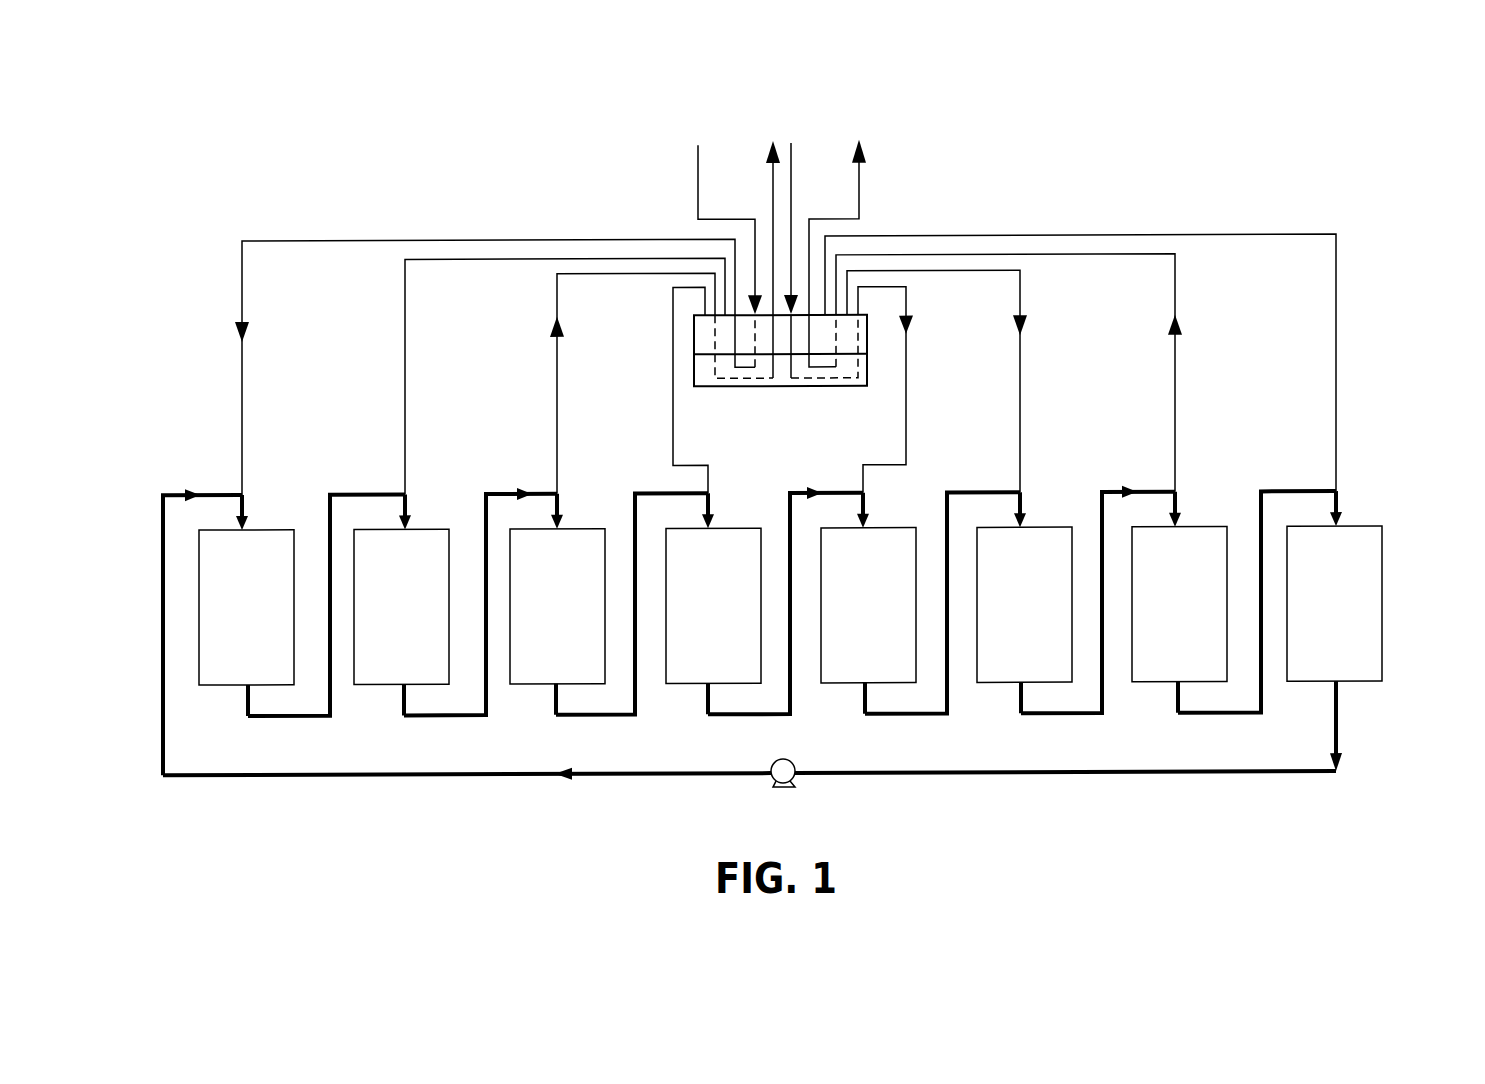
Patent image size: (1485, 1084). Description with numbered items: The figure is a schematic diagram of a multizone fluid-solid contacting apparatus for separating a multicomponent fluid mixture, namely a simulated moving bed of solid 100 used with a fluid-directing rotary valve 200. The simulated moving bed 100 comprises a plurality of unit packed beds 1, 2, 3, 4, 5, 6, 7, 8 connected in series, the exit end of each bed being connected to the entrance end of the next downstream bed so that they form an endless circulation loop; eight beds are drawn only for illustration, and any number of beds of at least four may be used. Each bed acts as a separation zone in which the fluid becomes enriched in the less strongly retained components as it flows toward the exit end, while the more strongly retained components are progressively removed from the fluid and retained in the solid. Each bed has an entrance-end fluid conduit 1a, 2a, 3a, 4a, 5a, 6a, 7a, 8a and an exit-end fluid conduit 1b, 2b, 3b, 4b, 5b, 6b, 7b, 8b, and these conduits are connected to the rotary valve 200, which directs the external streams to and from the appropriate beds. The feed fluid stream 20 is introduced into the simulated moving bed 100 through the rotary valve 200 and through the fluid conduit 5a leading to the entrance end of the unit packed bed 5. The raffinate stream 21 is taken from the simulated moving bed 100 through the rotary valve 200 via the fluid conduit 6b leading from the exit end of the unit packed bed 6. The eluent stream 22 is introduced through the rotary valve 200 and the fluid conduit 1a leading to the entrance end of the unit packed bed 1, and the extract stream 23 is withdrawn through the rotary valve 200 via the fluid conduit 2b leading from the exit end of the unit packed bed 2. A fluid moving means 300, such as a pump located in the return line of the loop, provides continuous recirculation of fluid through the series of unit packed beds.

The unit packed bed 1 is at (246, 607).
The unit packed bed 2 is at (401, 606).
The unit packed bed 3 is at (557, 606).
The unit packed bed 4 is at (713, 605).
The unit packed bed 5 is at (868, 605).
The unit packed bed 6 is at (1024, 604).
The unit packed bed 7 is at (1179, 604).
The unit packed bed 8 is at (1334, 603).
The fluid conduit 1a is at (259, 512).
The fluid conduit 2a is at (422, 511).
The fluid conduit 3a is at (574, 511).
The fluid conduit 4a is at (725, 510).
The fluid conduit 5a is at (880, 510).
The fluid conduit 6a is at (1037, 509).
The fluid conduit 7a is at (1192, 509).
The fluid conduit 8a is at (1353, 508).
The fluid conduit 1b is at (268, 700).
The fluid conduit 2b is at (424, 699).
The fluid conduit 3b is at (576, 699).
The fluid conduit 4b is at (728, 698).
The fluid conduit 5b is at (885, 698).
The fluid conduit 6b is at (1041, 697).
The fluid conduit 7b is at (1198, 697).
The fluid conduit 8b is at (1353, 726).
The feed fluid stream 20 is at (807, 228).
The raffinate stream 21 is at (852, 227).
The eluent stream 22 is at (711, 229).
The extract stream 23 is at (756, 228).
The simulated moving bed of solid 100 is at (819, 633).
The rotary valve 200 is at (785, 364).
The fluid moving means 300 is at (789, 788).